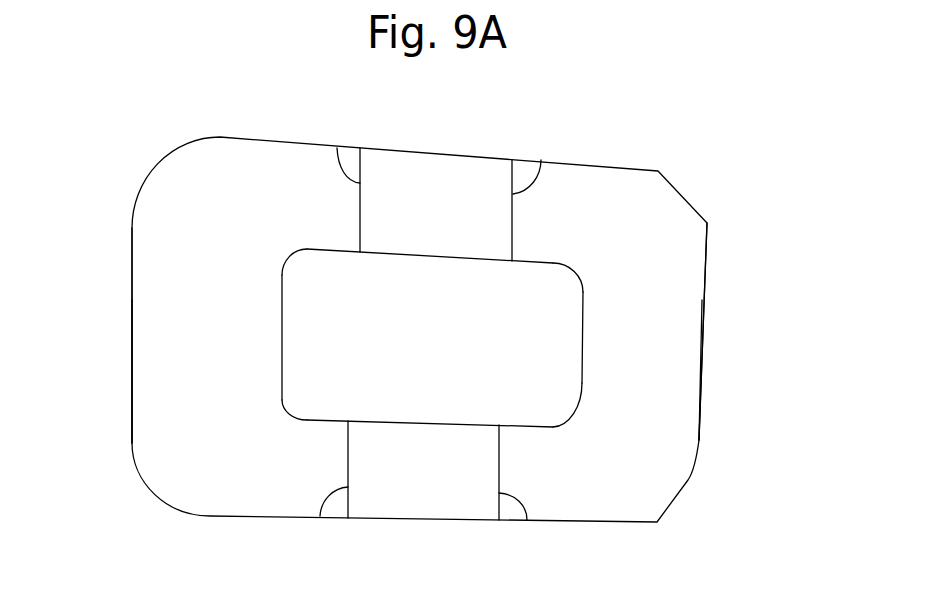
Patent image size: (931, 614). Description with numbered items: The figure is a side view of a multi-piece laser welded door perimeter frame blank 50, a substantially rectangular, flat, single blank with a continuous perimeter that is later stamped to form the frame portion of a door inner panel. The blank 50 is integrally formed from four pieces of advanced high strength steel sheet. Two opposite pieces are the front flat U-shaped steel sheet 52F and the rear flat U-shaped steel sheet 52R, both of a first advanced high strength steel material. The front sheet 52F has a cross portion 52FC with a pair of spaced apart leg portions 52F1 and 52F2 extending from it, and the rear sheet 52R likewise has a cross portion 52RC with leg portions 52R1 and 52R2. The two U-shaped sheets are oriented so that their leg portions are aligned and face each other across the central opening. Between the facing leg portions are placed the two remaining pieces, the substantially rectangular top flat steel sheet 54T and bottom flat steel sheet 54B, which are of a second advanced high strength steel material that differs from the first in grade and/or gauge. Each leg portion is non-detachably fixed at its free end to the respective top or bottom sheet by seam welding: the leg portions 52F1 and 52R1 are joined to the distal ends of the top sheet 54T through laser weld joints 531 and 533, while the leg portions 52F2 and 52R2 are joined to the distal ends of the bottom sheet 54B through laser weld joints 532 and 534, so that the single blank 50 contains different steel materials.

The door perimeter frame blank 50 is at (722, 167).
The rear flat U-shaped steel sheet 52R is at (118, 396).
The cross portion of rear U-shaped steel sheet 52RC is at (147, 309).
The front flat U-shaped steel sheet 52F is at (714, 400).
The cross portion of front U-shaped steel sheet 52FC is at (682, 315).
The leg portion of rear U-shaped steel sheet 52R1 is at (310, 230).
The leg portion of rear U-shaped steel sheet 52R2 is at (302, 440).
The leg portion of front U-shaped steel sheet 52F1 is at (558, 242).
The leg portion of front U-shaped steel sheet 52F2 is at (549, 443).
The laser weld joint 531 is at (541, 160).
The laser weld joint 532 is at (527, 520).
The laser weld joint 533 is at (337, 148).
The laser weld joint 534 is at (320, 516).
The top flat steel sheet 54T is at (441, 140).
The bottom flat steel sheet 54B is at (422, 532).